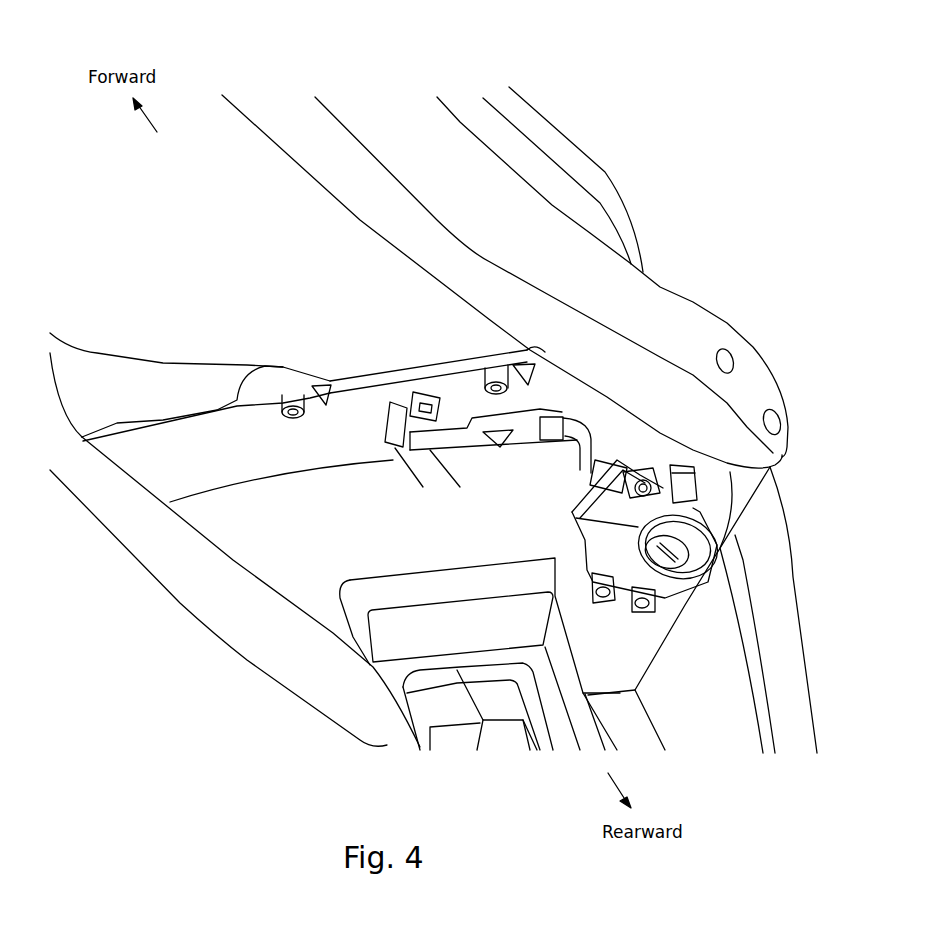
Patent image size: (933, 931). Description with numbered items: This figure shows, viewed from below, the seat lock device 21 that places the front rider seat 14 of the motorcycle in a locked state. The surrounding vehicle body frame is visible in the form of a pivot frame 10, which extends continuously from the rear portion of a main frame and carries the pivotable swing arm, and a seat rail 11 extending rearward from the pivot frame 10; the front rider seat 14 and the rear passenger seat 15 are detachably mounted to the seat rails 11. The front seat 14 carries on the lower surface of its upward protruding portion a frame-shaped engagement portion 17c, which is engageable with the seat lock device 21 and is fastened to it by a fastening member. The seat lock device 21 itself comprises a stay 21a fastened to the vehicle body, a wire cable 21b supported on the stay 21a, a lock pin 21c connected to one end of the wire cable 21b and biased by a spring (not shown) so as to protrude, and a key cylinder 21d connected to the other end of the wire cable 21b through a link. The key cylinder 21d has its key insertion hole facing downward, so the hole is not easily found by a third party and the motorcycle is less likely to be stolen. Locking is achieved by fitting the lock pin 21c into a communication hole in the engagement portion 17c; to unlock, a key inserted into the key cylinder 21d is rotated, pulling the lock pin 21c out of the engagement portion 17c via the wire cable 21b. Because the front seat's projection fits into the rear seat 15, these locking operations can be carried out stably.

The pivot frame 10 is at (343, 205).
The seat rail 11 is at (153, 577).
The front rider seat 14 is at (583, 123).
The rear passenger seat 15 is at (838, 581).
The engagement portion 17c is at (405, 465).
The seat lock device 21 is at (531, 502).
The stay 21a is at (432, 460).
The wire cable 21b is at (570, 447).
The lock pin 21c is at (410, 467).
The key cylinder 21d is at (587, 569).